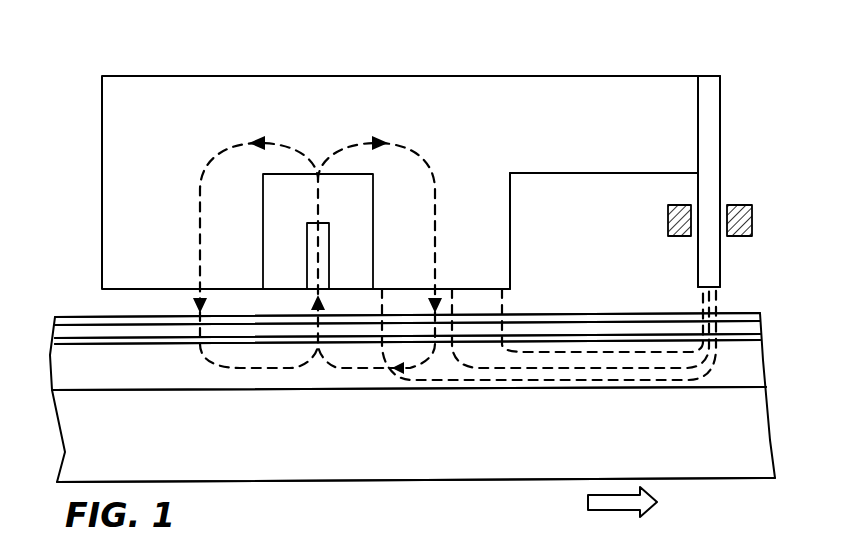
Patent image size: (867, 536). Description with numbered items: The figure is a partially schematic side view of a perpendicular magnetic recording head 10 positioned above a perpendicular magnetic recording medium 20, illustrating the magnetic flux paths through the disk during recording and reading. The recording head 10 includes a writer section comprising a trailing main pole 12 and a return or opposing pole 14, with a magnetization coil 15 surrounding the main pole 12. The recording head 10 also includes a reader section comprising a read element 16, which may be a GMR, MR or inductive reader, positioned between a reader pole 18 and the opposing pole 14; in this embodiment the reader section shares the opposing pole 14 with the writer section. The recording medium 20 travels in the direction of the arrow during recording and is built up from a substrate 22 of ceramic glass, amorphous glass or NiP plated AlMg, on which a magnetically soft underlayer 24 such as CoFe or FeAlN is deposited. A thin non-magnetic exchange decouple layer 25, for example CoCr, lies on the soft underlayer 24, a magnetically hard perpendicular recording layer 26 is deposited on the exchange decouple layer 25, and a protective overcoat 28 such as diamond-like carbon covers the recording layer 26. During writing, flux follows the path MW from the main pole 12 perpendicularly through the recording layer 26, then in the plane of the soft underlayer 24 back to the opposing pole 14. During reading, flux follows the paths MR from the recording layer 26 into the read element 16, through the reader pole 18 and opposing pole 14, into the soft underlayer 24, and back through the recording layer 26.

The perpendicular magnetic recording head 10 is at (411, 147).
The trailing main pole 12 is at (712, 267).
The opposing pole 14 is at (483, 222).
The magnetization coil 15 is at (736, 205).
The read element 16 is at (321, 263).
The reader pole 18 is at (167, 225).
The perpendicular magnetic recording medium 20 is at (405, 352).
The substrate 22 is at (760, 440).
The magnetically soft underlayer 24 is at (748, 372).
The exchange decouple layer 25 is at (762, 338).
The perpendicular recording layer 26 is at (760, 322).
The protective overcoat 28 is at (760, 313).
The read flux path MR is at (353, 363).
The write flux path MW is at (612, 354).